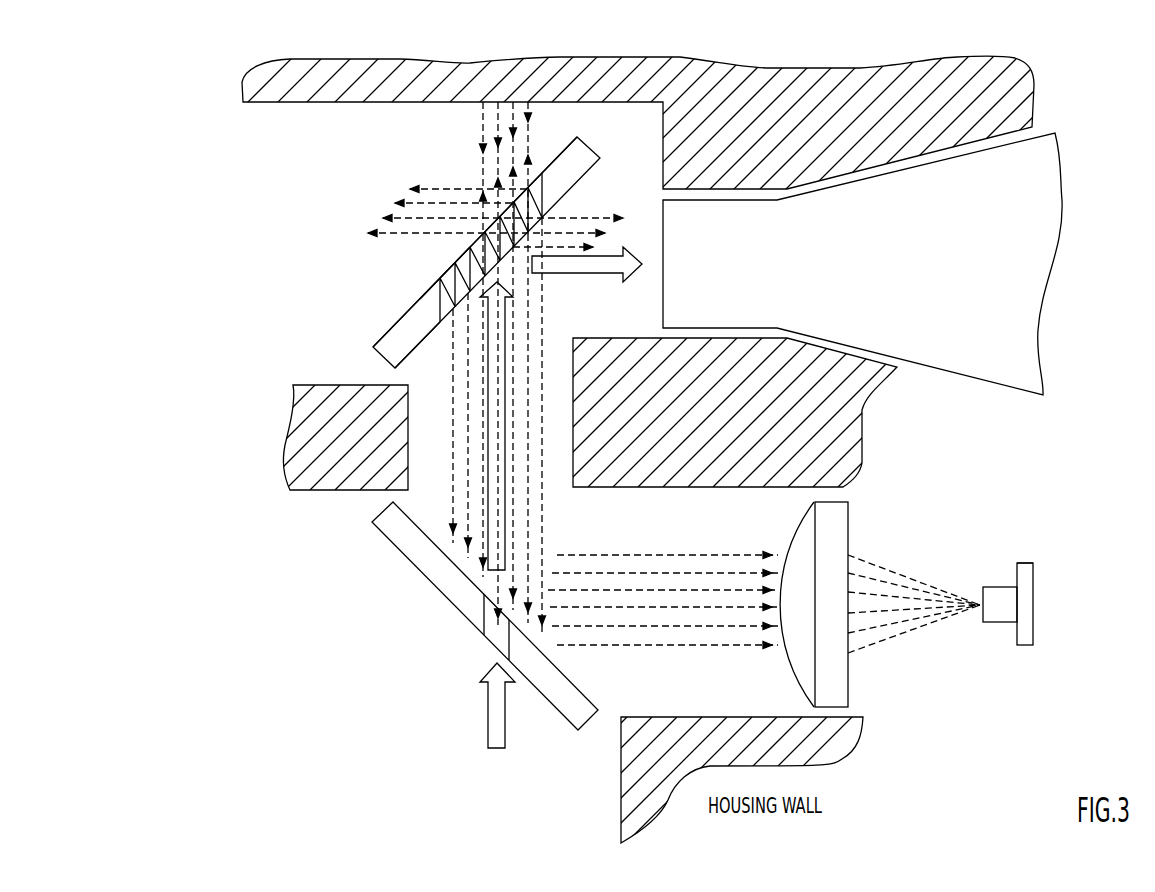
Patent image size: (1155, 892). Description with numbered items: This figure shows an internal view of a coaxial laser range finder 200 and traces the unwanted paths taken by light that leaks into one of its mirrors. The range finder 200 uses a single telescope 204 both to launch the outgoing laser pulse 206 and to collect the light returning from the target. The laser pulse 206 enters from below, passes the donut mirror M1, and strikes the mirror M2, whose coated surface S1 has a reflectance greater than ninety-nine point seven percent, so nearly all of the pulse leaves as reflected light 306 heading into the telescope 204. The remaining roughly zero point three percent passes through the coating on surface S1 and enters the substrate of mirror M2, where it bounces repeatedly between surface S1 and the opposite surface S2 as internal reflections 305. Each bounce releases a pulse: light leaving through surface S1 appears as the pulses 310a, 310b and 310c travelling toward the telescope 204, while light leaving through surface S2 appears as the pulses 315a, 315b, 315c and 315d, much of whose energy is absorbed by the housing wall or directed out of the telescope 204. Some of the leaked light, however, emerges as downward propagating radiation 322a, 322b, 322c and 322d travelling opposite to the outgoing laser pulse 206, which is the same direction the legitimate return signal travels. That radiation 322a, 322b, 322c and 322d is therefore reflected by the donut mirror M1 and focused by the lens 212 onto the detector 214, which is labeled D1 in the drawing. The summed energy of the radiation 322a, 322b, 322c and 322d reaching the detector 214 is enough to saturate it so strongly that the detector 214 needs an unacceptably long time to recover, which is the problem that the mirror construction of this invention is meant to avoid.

The laser range finder 200 is at (100, 48).
The telescope 204 is at (1047, 190).
The laser pulse 206 is at (508, 717).
The lens 212 is at (848, 535).
The detector 214 is at (1035, 587).
The internal reflections 305 is at (552, 180).
The reflected light 306 is at (607, 274).
The pulse exiting surface S1 310a is at (560, 250).
The pulse exiting surface S1 310b is at (587, 229).
The pulse exiting surface S1 310c is at (590, 218).
The pulse exiting surface S2 315a is at (483, 208).
The pulse exiting surface S2 315b is at (498, 190).
The pulse exiting surface S2 315c is at (515, 192).
The pulse exiting surface S2 315d is at (530, 180).
The downward propagating radiation 322a is at (453, 428).
The downward propagating radiation 322b is at (468, 487).
The downward propagating radiation 322c is at (528, 492).
The downward propagating radiation 322d is at (542, 525).
The donut mirror M1 is at (477, 616).
The mirror M2 is at (466, 242).
The substrate surface with reflecting coating S1 is at (410, 352).
The substrate surface S2 is at (423, 294).
The detector D1 is at (1027, 548).